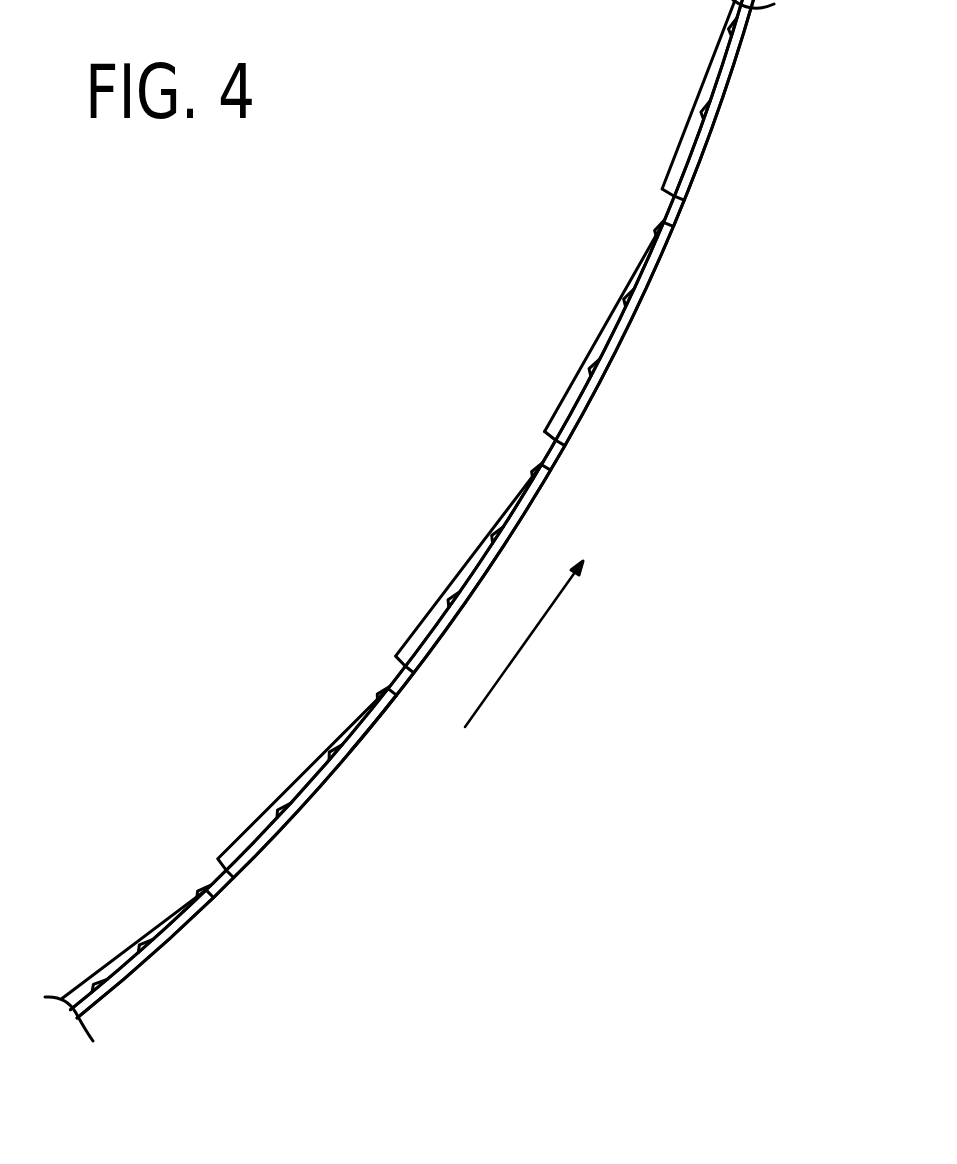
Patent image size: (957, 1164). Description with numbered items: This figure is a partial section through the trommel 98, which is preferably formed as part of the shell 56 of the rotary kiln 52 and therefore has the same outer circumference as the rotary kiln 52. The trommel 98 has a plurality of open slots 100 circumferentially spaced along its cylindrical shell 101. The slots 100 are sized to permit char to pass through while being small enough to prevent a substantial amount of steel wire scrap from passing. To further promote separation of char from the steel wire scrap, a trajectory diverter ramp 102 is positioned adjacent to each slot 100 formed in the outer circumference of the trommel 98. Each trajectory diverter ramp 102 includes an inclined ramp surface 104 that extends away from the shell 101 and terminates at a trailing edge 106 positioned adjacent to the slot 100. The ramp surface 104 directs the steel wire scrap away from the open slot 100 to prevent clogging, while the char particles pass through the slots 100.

The rotary kiln 52 is at (618, 493).
The shell 56 is at (635, 327).
The trommel 98 is at (411, 499).
The open slots 100 is at (684, 216).
The cylindrical shell 101 is at (376, 728).
The trajectory diverter ramp 102 is at (683, 142).
The inclined ramp surface 104 is at (538, 333).
The trailing edge 106 is at (545, 441).